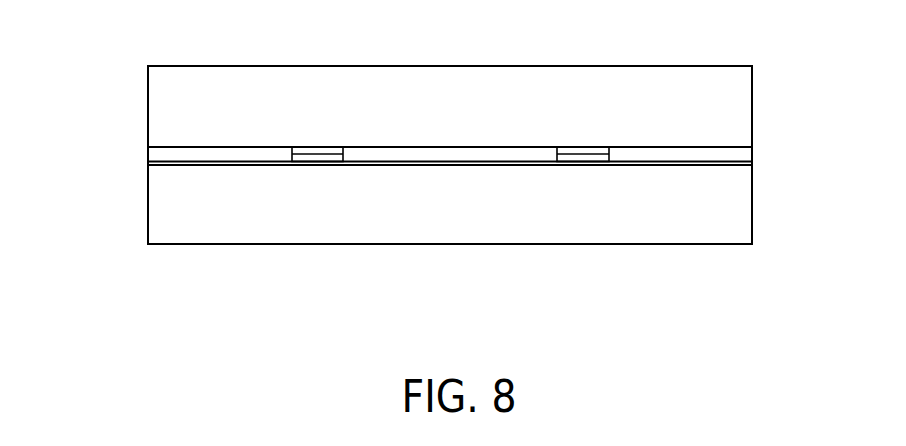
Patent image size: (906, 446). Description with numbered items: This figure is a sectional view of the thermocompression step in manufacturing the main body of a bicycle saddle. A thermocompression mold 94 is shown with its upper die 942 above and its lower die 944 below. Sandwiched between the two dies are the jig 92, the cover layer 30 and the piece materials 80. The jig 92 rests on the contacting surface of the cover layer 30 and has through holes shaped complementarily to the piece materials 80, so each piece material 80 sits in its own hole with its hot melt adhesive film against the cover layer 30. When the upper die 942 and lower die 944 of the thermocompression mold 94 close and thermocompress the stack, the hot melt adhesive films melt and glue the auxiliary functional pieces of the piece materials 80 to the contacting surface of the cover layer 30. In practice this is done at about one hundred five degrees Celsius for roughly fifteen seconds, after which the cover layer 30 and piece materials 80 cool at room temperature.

The thermocompression mold 94 is at (70, 75).
The upper die 942 is at (190, 112).
The lower die 944 is at (183, 202).
The jig 92 is at (686, 150).
The cover layer 30 is at (697, 162).
The piece material 80 is at (317, 145).